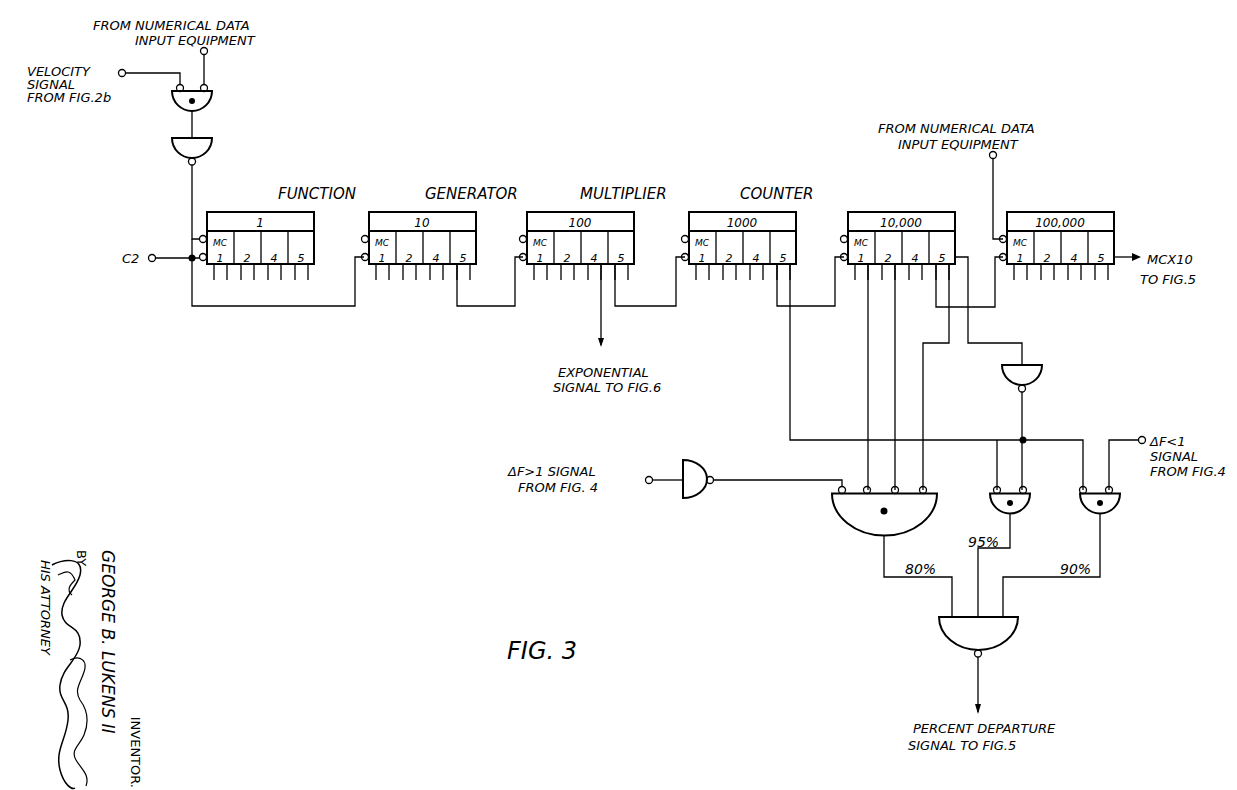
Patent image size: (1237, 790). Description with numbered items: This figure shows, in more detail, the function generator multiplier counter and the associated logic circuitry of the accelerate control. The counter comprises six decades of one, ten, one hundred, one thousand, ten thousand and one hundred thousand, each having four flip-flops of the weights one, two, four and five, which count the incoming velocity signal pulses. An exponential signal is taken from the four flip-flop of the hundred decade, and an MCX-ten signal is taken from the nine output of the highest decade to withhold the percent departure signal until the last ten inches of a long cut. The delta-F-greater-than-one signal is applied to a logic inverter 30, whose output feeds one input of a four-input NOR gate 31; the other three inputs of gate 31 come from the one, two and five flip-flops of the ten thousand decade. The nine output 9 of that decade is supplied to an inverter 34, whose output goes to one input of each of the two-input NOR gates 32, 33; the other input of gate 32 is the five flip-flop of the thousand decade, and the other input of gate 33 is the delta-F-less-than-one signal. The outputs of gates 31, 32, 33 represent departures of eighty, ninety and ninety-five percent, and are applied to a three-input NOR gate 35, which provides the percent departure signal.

The output line from 10,000 counter stage 9 is at (965, 251).
The logic inverter 30 is at (707, 468).
The four-input NOR gate 31 is at (938, 492).
The two-input NOR gate 32 is at (1032, 500).
The two-input NOR gate 33 is at (1122, 500).
The inverter 34 is at (1046, 381).
The three-input NOR gate 35 is at (1022, 628).